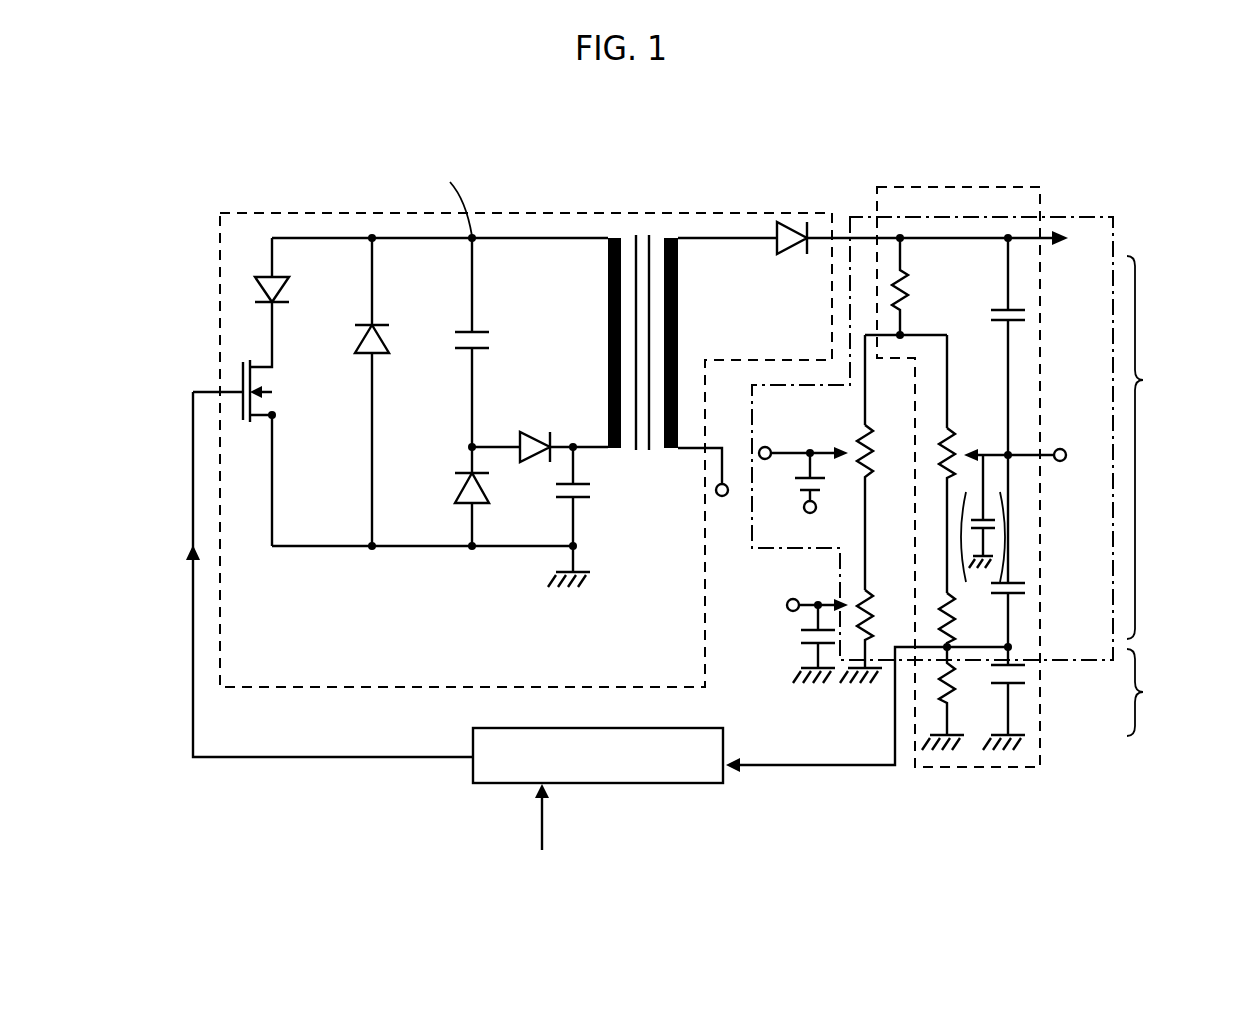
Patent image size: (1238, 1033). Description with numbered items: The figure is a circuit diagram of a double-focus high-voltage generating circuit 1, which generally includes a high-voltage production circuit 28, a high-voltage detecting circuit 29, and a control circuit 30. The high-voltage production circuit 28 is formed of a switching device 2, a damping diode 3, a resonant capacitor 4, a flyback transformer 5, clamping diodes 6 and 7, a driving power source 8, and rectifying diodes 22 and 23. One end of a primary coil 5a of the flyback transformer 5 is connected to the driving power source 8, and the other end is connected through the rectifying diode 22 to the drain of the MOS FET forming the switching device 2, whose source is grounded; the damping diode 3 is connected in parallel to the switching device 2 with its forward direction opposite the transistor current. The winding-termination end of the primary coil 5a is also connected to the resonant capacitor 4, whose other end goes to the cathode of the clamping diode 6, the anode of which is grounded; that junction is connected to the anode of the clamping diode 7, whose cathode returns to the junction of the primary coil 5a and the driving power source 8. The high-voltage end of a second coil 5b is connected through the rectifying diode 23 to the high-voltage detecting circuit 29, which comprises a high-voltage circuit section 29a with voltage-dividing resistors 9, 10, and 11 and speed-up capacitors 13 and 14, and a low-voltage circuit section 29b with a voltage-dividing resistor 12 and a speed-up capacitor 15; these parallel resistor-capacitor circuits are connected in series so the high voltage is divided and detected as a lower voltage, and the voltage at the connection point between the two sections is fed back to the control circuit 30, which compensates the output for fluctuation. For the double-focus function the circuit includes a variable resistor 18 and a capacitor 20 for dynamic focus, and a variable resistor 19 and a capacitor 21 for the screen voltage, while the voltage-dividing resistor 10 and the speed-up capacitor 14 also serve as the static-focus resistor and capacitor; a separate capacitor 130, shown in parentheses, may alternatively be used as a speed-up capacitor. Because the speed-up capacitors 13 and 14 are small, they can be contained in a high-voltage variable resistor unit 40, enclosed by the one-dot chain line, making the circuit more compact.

The high-voltage generating circuit 1 is at (252, 188).
The switching device 2 is at (260, 420).
The damping diode 3 is at (372, 357).
The resonant capacitor 4 is at (482, 335).
The flyback transformer 5 is at (662, 334).
The primary coil 5a is at (607, 318).
The second coil 5b is at (680, 320).
The clamping diode 6 is at (456, 490).
The clamping diode 7 is at (540, 430).
The driving power source 8 is at (590, 495).
The voltage-dividing resistor 9 is at (912, 294).
The voltage-dividing resistor 10 is at (952, 440).
The voltage-dividing resistor 11 is at (958, 618).
The voltage-dividing resistor 12 is at (950, 690).
The speed-up capacitor 13 is at (1015, 326).
The speed-up capacitor 14 is at (1018, 600).
The speed-up capacitor 15 is at (1020, 700).
The variable resistor for dynamic focus 18 is at (860, 446).
The variable resistor for screen voltage 19 is at (872, 596).
The capacitor for dynamic focus 20 is at (800, 503).
The capacitor for screen voltage 21 is at (806, 652).
The rectifying diode 22 is at (288, 292).
The rectifying diode 23 is at (789, 230).
The high-voltage production circuit 28 is at (505, 212).
The high-voltage detecting circuit 29 is at (935, 186).
The high-voltage circuit section 29a is at (1163, 447).
The low-voltage circuit section 29b is at (1163, 692).
The control circuit 30 is at (623, 784).
The high-voltage variable resistor unit 40 is at (1080, 216).
The capacitor 130 is at (1000, 540).